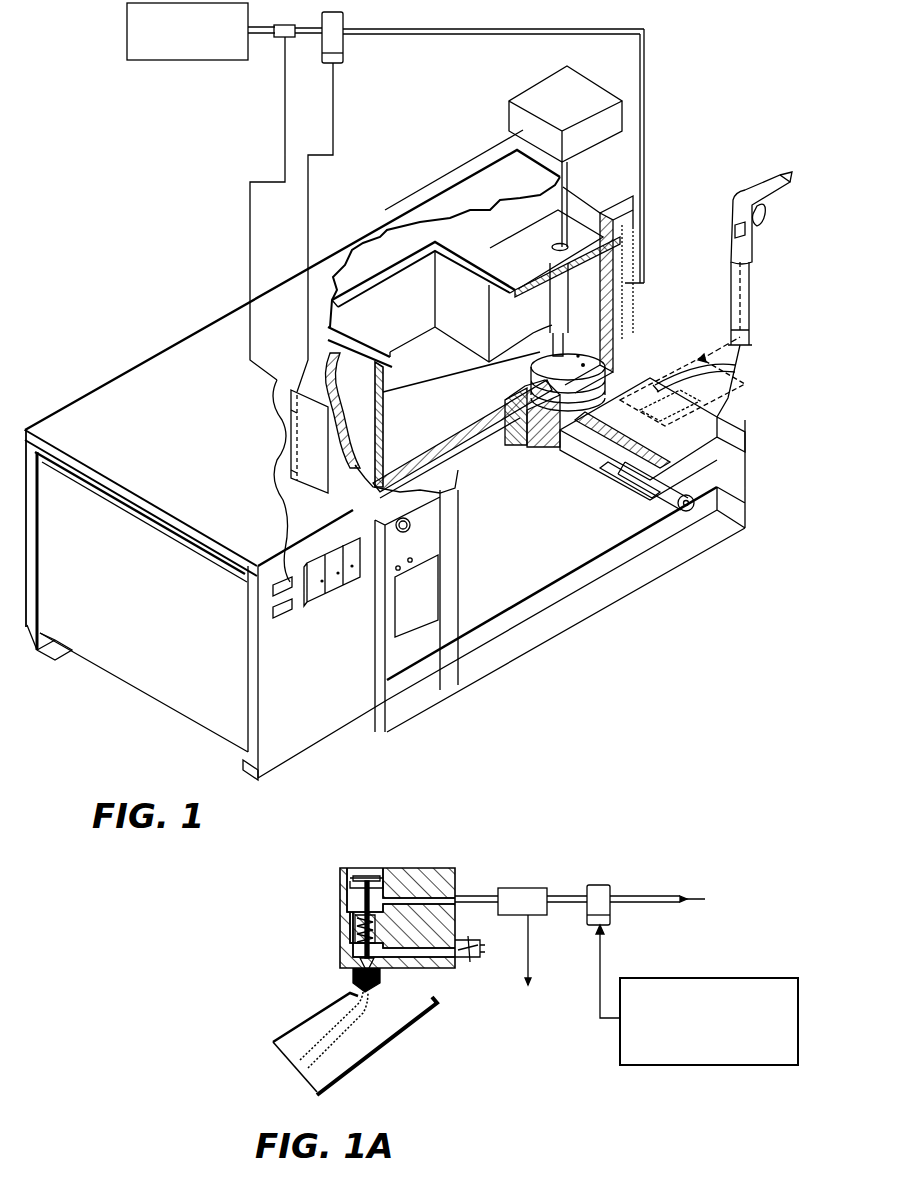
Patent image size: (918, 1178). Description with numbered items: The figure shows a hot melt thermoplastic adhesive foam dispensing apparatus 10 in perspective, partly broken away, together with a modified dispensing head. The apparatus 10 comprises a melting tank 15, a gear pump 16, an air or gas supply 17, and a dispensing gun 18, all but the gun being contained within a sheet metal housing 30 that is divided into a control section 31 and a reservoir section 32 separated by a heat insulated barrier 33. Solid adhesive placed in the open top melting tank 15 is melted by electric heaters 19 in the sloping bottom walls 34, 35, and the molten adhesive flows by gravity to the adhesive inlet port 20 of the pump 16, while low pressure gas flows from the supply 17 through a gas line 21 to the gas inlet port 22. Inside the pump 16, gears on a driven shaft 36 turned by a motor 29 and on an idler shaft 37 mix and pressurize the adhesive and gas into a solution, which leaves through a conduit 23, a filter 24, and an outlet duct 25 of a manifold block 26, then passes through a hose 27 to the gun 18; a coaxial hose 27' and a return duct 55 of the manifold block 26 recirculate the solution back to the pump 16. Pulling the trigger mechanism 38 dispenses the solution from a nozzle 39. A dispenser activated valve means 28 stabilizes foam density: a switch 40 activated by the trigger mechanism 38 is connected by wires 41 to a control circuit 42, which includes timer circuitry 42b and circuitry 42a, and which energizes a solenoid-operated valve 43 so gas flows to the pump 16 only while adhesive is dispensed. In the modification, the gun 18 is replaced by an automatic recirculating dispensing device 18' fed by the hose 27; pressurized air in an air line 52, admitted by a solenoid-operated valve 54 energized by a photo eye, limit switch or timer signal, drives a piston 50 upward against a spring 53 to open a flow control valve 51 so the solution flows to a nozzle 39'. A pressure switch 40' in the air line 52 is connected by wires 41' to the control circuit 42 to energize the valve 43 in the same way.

In FIG. 1, the dispensing apparatus 10 is at (118, 707).
In FIG. 1, the melting tank 15 is at (382, 298).
In FIG. 1, the gear pump 16 is at (548, 370).
In FIG. 1, the gas supply 17 is at (152, 50).
In FIG. 1, the dispensing gun 18 is at (759, 228).
In FIG. 1A, the automatic recirculating dispensing device 18' is at (397, 902).
In FIG. 1, the electric heaters 19 is at (462, 450).
In FIG. 1, the adhesive inlet port 20 is at (628, 351).
In FIG. 1, the gas line 21 is at (648, 42).
In FIG. 1, the gas inlet port 22 is at (630, 335).
In FIG. 1, the conduit 23 is at (582, 460).
In FIG. 1, the filter 24 is at (628, 480).
In FIG. 1, the outlet duct 25 is at (730, 455).
In FIG. 1, the manifold block 26 is at (722, 438).
In FIG. 1, the hose 27 is at (719, 340).
In FIG. 1A, the hose 27 is at (474, 962).
In FIG. 1, the hose 27' is at (731, 317).
In FIG. 1A, the hose 27' is at (466, 983).
In FIG. 1, the dispenser activated valve means 28 is at (273, 95).
In FIG. 1, the motor 29 is at (528, 127).
In FIG. 1, the sheet metal housing 30 is at (180, 436).
In FIG. 1, the control section 31 is at (282, 520).
In FIG. 1, the reservoir section 32 is at (492, 523).
In FIG. 1, the heat insulated barrier 33 is at (322, 357).
In FIG. 1, the bottom wall 34 is at (440, 366).
In FIG. 1, the bottom wall 35 is at (456, 422).
In FIG. 1, the shaft 36 is at (556, 340).
In FIG. 1, the idler shaft 37 is at (612, 373).
In FIG. 1, the trigger mechanism 38 is at (286, 25).
In FIG. 1, the nozzle 39 is at (795, 165).
In FIG. 1A, the nozzle 39' is at (355, 1043).
In FIG. 1, the sensing device 40 is at (715, 224).
In FIG. 1A, the pressure switch 40' is at (542, 881).
In FIG. 1, the wires 41 is at (507, 464).
In FIG. 1A, the wires 41' is at (509, 975).
In FIG. 1, the control circuit 42 is at (305, 445).
In FIG. 1, the control 42a is at (296, 480).
In FIG. 1, the timer circuitry 42b is at (296, 412).
In FIG. 1, the solenoid-operated valve 43 is at (340, 24).
In FIG. 1A, the pneumatically operated piston 50 is at (345, 885).
In FIG. 1A, the flow control valve 51 is at (360, 968).
In FIG. 1A, the air line 52 is at (490, 892).
In FIG. 1A, the spring 53 is at (355, 935).
In FIG. 1A, the solenoid-operated valve 54 is at (617, 913).
In FIG. 1, the return duct 55 is at (595, 478).